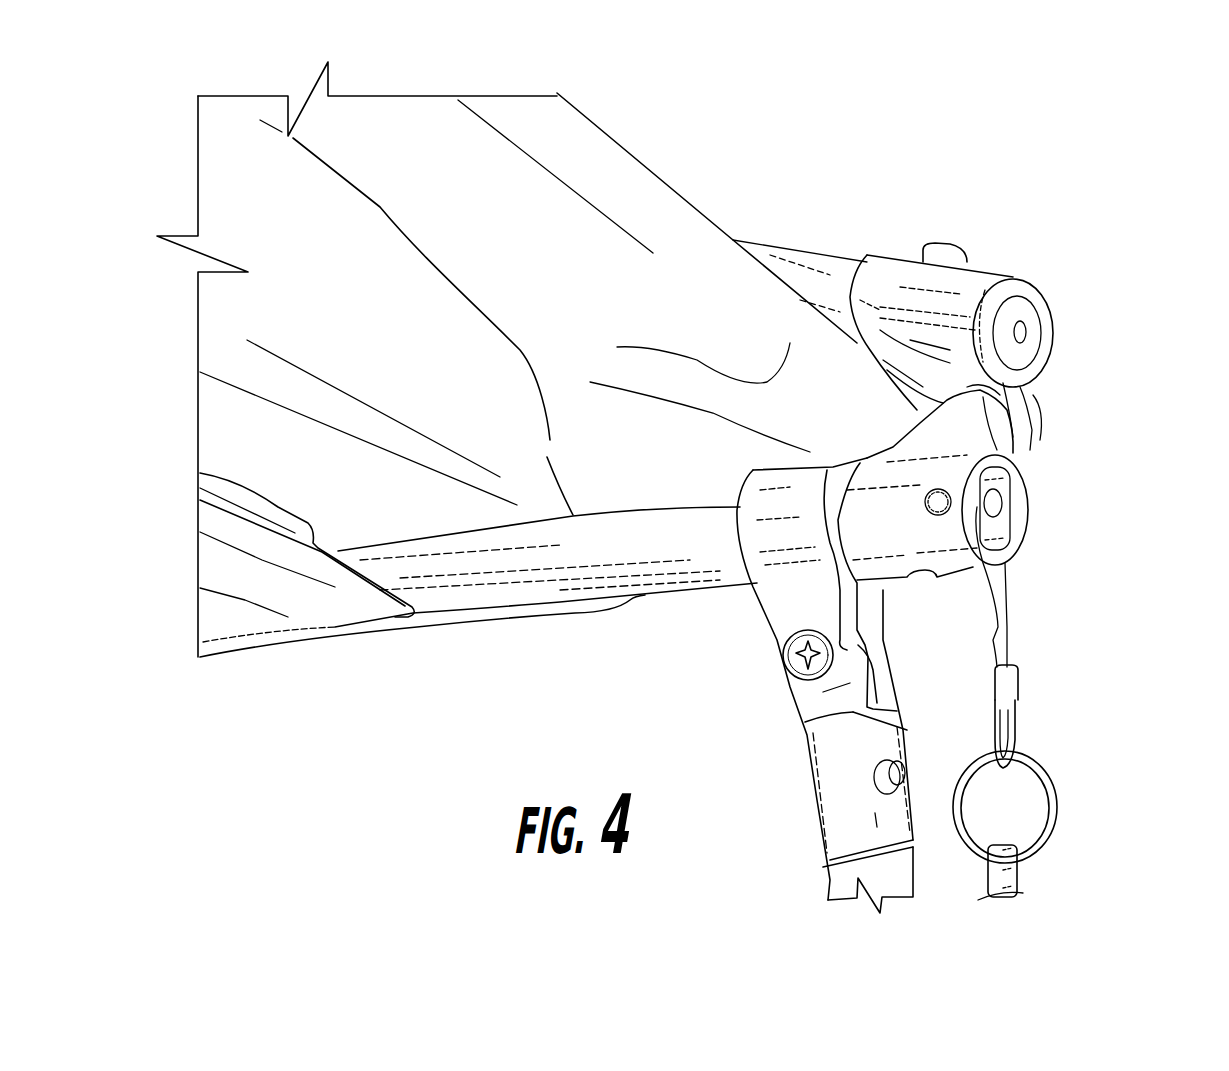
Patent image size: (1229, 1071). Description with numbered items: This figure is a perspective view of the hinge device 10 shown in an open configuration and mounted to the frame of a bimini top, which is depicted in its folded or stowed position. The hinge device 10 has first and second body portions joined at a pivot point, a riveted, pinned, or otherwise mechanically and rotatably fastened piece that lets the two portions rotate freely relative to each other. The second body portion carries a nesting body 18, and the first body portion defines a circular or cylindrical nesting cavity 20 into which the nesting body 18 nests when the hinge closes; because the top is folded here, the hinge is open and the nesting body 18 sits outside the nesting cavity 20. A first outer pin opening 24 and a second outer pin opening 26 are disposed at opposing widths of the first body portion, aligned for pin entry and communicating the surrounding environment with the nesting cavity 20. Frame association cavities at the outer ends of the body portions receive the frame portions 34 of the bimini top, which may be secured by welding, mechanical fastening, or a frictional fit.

The hinge device 10 is at (1051, 238).
The nesting body portion 18 is at (1032, 343).
The nesting cavity 20 is at (1003, 528).
The first outer pin opening 24 is at (1033, 502).
The second outer pin opening 26 is at (1005, 703).
The frame portions 34 is at (815, 273).